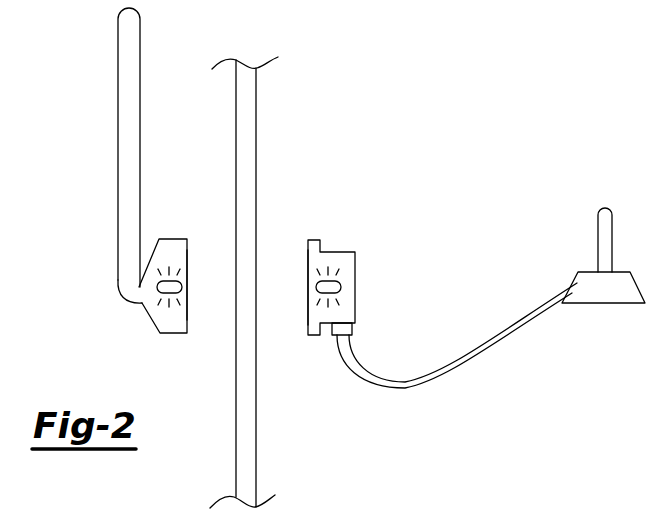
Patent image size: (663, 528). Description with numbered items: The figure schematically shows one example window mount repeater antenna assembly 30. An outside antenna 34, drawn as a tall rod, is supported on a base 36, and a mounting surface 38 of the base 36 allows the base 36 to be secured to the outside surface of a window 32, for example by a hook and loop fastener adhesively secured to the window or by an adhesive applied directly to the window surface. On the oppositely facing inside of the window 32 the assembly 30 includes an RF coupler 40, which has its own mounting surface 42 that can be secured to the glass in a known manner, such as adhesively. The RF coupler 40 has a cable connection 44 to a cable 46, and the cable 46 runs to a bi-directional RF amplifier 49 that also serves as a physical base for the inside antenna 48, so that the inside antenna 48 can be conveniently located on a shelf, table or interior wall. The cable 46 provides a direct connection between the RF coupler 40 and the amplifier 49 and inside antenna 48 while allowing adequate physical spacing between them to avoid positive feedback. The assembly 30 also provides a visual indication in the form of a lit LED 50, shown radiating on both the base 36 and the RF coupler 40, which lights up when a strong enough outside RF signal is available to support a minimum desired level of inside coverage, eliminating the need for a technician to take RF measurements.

The window mount antenna assembly 30 is at (363, 150).
The window 32 is at (254, 108).
The outside antenna 34 is at (118, 115).
The base 36 is at (172, 239).
The mounting surface 38 is at (187, 289).
The RF coupler 40 is at (334, 252).
The mounting surface 42 is at (308, 292).
The cable connection 44 is at (352, 325).
The cable 46 is at (365, 384).
The inside antenna 48 is at (598, 243).
The bi-directional RF amplifier 49 is at (608, 303).
The LED 50 is at (160, 287).